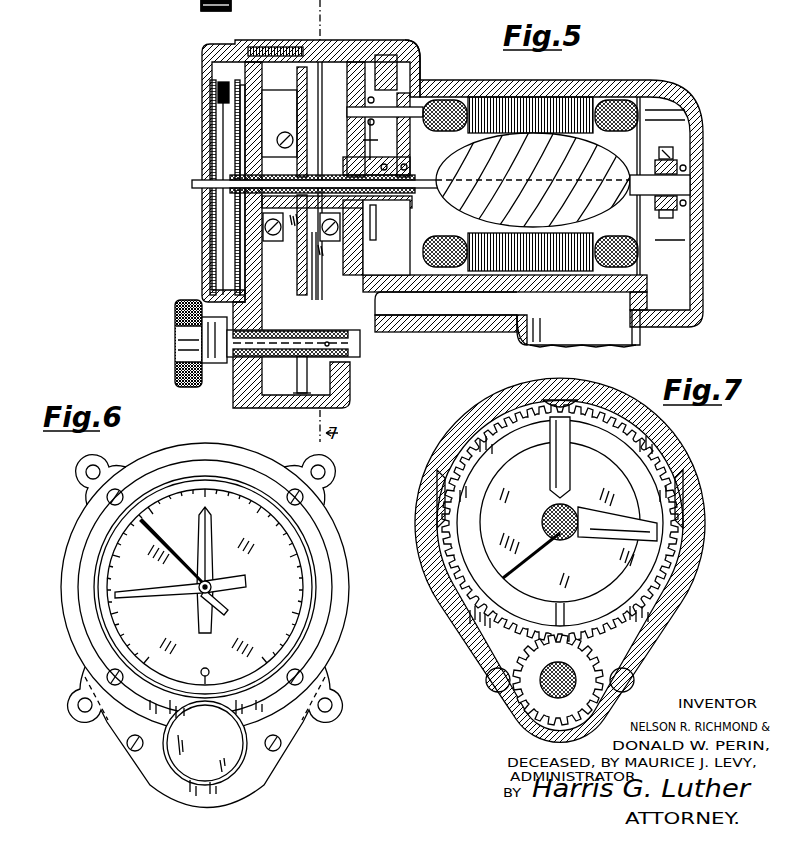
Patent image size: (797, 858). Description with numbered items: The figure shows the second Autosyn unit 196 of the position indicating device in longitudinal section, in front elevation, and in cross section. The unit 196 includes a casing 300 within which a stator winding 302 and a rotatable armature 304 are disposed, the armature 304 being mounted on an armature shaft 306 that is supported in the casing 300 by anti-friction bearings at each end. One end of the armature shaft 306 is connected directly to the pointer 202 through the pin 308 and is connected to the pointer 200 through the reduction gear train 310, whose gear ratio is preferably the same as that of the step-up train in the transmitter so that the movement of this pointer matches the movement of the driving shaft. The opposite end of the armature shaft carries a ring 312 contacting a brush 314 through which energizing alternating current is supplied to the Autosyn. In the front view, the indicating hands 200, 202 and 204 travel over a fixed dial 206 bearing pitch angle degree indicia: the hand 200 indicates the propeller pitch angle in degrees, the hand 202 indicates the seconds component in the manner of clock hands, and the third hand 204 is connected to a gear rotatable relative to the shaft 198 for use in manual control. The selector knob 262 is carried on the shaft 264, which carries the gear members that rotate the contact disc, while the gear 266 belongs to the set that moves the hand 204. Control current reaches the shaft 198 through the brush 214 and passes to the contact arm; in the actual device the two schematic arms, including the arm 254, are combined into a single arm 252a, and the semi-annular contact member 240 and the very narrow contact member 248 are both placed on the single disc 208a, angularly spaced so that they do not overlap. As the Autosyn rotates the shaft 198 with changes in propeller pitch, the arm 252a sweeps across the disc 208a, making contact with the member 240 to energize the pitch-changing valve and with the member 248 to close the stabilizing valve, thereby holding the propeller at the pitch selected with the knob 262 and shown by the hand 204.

In FIG. 5, the Autosyn unit 196 is at (462, 330).
In FIG. 5, the shaft 198 is at (265, 132).
In FIG. 5, the indicating hand 200 is at (228, 228).
In FIG. 6, the indicating hand 200 is at (140, 590).
In FIG. 5, the indicating hand 202 is at (223, 152).
In FIG. 6, the indicating hand 202 is at (157, 543).
In FIG. 5, the indicating hand 204 is at (228, 103).
In FIG. 6, the indicating hand 204 is at (200, 527).
In FIG. 5, the fixed dial 206 is at (240, 260).
In FIG. 6, the fixed dial 206 is at (283, 597).
In FIG. 5, the disc 208a is at (308, 297).
In FIG. 7, the disc 208a is at (493, 538).
In FIG. 5, the brush 214 is at (362, 254).
In FIG. 5, the contact member 240 is at (303, 60).
In FIG. 7, the contact member 240 is at (467, 490).
In FIG. 7, the contact member 248 is at (550, 404).
In FIG. 5, the arm 252a is at (322, 110).
In FIG. 7, the arm 252a is at (603, 517).
In FIG. 5, the arm 254 is at (349, 5).
In FIG. 5, the selector knob 262 is at (185, 333).
In FIG. 6, the selector knob 262 is at (180, 763).
In FIG. 5, the shaft 264 is at (233, 373).
In FIG. 7, the shaft 264 is at (540, 676).
In FIG. 5, the gear 266 is at (297, 367).
In FIG. 7, the gear 266 is at (525, 710).
In FIG. 5, the casing 300 is at (623, 80).
In FIG. 6, the casing 300 is at (340, 512).
In FIG. 5, the stator winding 302 is at (530, 107).
In FIG. 5, the armature 304 is at (492, 153).
In FIG. 5, the armature shaft 306 is at (420, 217).
In FIG. 5, the pin 308 is at (210, 184).
In FIG. 5, the reduction gear train 310 is at (418, 56).
In FIG. 5, the ring 312 is at (680, 217).
In FIG. 5, the brush 314 is at (677, 143).